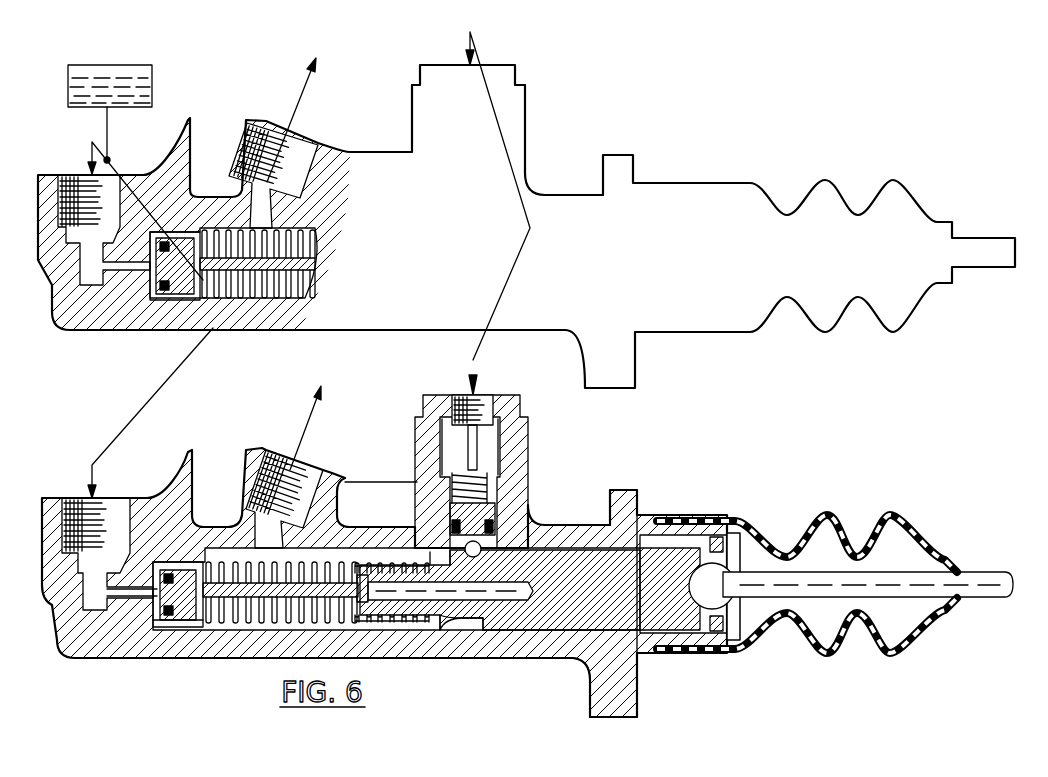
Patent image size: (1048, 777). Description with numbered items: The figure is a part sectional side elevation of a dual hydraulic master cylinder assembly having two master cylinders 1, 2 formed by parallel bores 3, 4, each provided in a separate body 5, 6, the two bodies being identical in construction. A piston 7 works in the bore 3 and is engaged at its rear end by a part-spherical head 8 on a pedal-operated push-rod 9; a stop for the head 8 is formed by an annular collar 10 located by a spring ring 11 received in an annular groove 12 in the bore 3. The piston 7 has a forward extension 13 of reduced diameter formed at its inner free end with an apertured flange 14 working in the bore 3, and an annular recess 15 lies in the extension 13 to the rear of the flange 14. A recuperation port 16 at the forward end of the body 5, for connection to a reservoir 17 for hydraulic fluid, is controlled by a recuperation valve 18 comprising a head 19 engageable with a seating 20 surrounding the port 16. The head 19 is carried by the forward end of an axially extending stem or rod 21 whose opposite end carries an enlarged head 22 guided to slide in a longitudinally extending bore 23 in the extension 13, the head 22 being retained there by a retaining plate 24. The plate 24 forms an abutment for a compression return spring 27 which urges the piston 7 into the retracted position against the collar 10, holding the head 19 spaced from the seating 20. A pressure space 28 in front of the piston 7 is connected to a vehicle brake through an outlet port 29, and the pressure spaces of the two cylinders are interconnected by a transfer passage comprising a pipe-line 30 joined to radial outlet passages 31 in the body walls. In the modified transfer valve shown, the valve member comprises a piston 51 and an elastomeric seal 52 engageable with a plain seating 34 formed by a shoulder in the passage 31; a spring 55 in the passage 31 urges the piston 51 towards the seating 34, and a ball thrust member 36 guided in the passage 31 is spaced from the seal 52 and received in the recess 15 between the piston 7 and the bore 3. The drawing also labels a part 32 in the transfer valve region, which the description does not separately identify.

The master cylinder 1 is at (640, 512).
The master cylinder 2 is at (672, 203).
The bore 3 is at (323, 553).
The bore 4 is at (285, 205).
The body 5 is at (593, 560).
The body 6 is at (563, 200).
The piston 7 is at (686, 622).
The part-spherical head 8 is at (758, 537).
The pedal-operated push-rod 9 is at (962, 580).
The annular collar 10 is at (728, 640).
The spring ring 11 is at (745, 632).
The annular groove 12 is at (720, 540).
The forward extension 13 is at (580, 660).
The apertured flange 14 is at (445, 622).
The annular recess 15 is at (480, 620).
The recuperation port 16 is at (78, 650).
The reservoir 17 is at (150, 92).
The recuperation valve 18 is at (150, 306).
The head 19 is at (200, 622).
The seating 20 is at (158, 613).
The stem or rod 21 is at (306, 598).
The enlarged head 22 is at (372, 602).
The longitudinally extending bore 23 is at (570, 610).
The retaining plate 24 is at (368, 615).
The compression return spring 27 is at (356, 622).
The pressure space 28 is at (248, 302).
The outlet port 29 is at (280, 450).
The pipe-line 30 is at (505, 130).
The radial outlet passage 31 is at (517, 453).
The valve seat 32 is at (455, 517).
The seating 34 is at (497, 552).
The thrust member 36 is at (465, 548).
The piston 51 is at (498, 490).
The seal 52 is at (452, 485).
The spring 55 is at (450, 410).